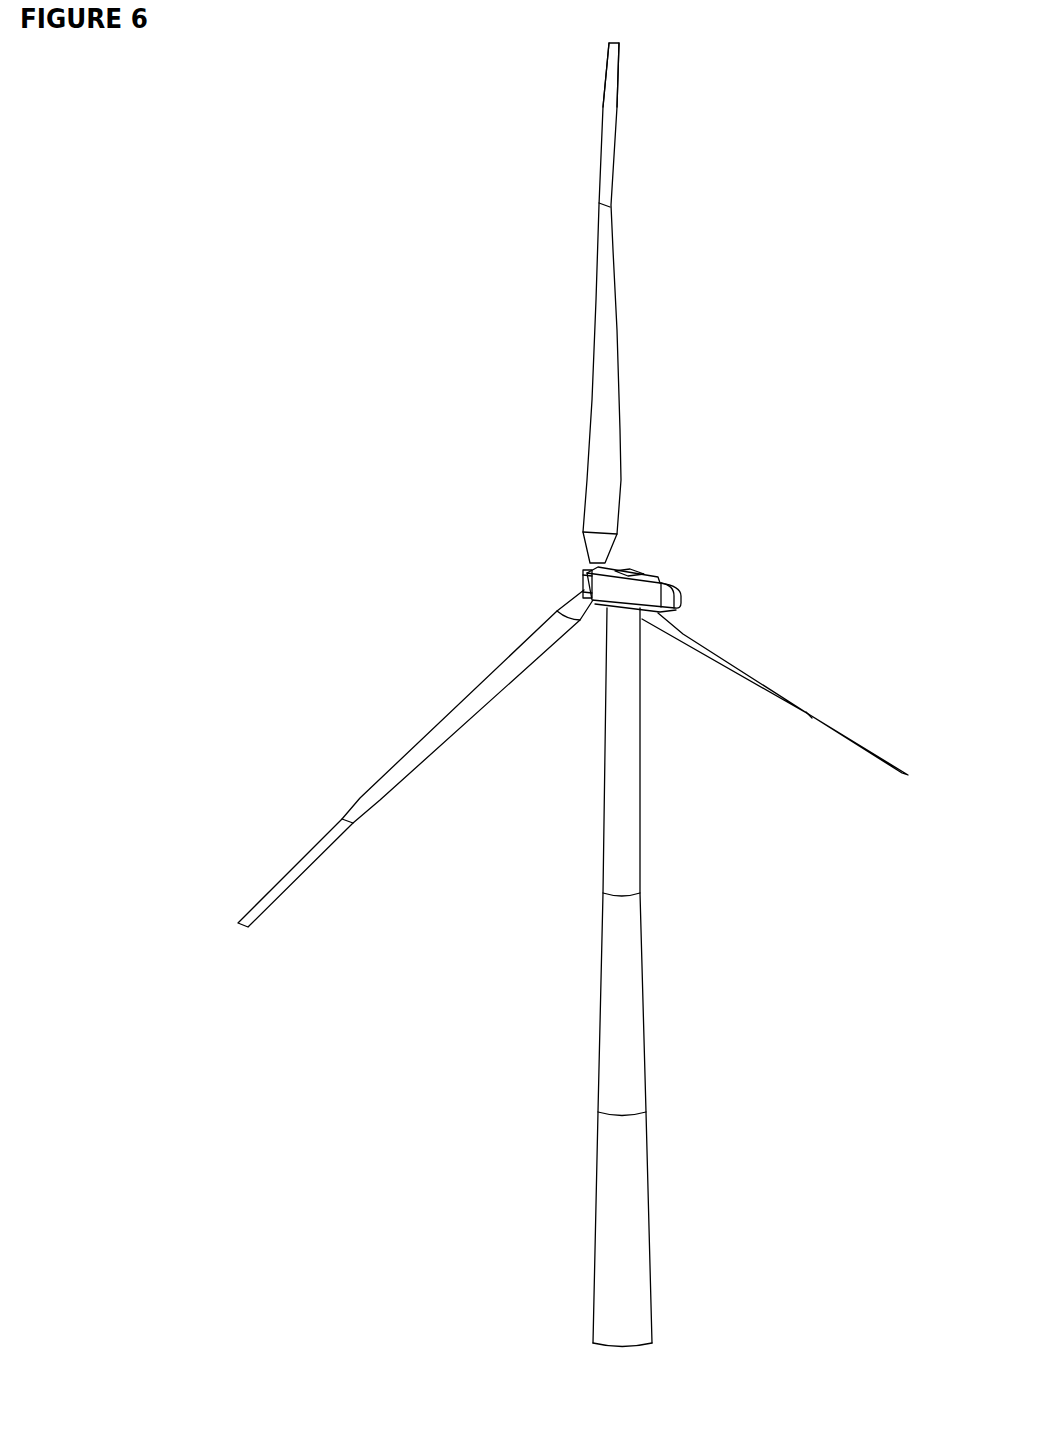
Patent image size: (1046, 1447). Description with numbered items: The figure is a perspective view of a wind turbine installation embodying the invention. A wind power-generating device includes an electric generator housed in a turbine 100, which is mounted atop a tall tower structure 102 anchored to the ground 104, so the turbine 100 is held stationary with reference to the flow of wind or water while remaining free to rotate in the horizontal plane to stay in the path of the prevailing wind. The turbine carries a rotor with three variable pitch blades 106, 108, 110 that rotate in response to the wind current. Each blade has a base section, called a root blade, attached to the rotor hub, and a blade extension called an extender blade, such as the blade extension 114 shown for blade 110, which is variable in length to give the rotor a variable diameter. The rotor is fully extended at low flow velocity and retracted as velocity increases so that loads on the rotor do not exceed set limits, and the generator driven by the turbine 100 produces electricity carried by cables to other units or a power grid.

The turbine 100 is at (630, 603).
The tower structure 102 is at (618, 813).
The ground 104 is at (598, 1345).
The variable pitch blade 106 is at (682, 637).
The variable pitch blade 108 is at (530, 637).
The variable pitch blade 110 is at (595, 323).
The blade extension 114 is at (612, 107).